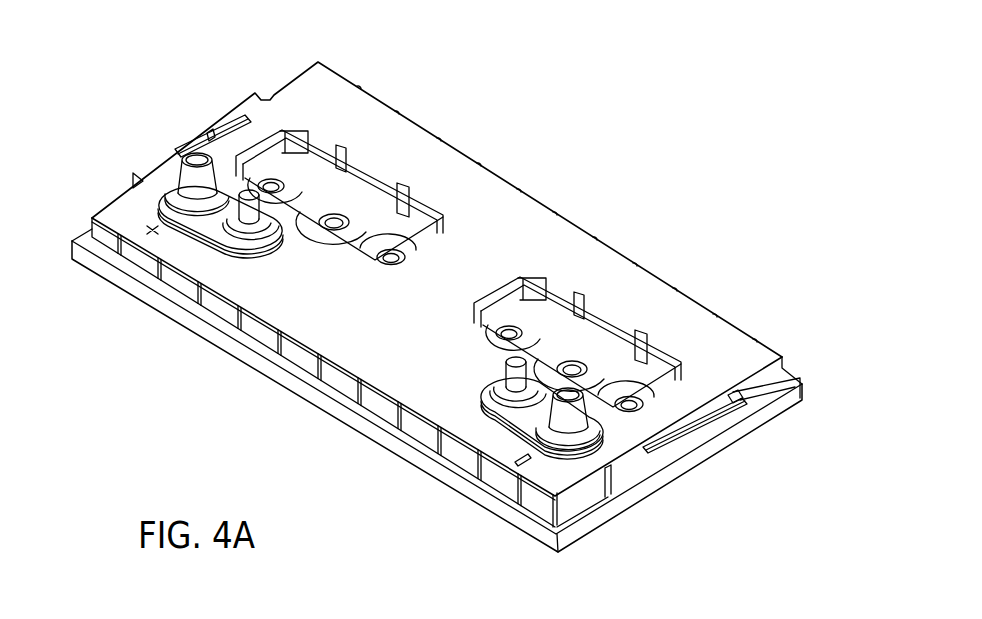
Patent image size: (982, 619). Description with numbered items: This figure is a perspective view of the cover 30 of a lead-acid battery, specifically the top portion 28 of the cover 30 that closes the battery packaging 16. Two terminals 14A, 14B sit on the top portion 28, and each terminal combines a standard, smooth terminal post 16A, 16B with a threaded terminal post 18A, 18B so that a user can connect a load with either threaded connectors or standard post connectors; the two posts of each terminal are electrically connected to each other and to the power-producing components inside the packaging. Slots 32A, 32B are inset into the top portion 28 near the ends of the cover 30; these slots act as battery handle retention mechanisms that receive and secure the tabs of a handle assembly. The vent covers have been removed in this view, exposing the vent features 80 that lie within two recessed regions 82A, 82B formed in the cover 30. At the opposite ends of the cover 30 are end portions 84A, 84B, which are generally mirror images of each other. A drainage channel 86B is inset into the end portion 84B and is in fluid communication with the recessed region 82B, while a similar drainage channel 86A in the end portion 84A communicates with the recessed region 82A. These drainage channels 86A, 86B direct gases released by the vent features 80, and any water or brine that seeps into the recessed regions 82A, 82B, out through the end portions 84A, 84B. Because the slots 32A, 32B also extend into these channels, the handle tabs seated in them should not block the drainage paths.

The packaging 16 is at (360, 116).
The cover 30 is at (437, 209).
The top portion 28 is at (480, 250).
The vent features 80 is at (392, 260).
The recessed region 82A is at (313, 183).
The recessed region 82B is at (556, 343).
The end portion 84A is at (120, 186).
The end portion 84B is at (614, 509).
The drainage channel 86A is at (226, 113).
The drainage channel 86B is at (710, 436).
The slot 32A is at (204, 136).
The slot 32B is at (705, 406).
The terminal 14A is at (212, 228).
The terminal 14B is at (527, 430).
The smooth terminal post 16A is at (197, 185).
The smooth terminal post 16B is at (567, 422).
The threaded terminal post 18A is at (249, 215).
The threaded terminal post 18B is at (513, 383).